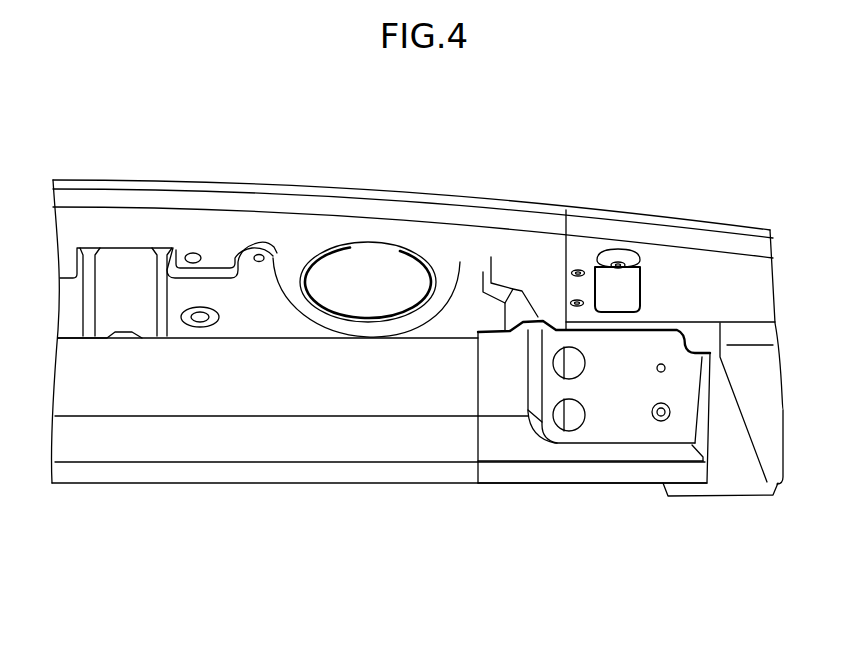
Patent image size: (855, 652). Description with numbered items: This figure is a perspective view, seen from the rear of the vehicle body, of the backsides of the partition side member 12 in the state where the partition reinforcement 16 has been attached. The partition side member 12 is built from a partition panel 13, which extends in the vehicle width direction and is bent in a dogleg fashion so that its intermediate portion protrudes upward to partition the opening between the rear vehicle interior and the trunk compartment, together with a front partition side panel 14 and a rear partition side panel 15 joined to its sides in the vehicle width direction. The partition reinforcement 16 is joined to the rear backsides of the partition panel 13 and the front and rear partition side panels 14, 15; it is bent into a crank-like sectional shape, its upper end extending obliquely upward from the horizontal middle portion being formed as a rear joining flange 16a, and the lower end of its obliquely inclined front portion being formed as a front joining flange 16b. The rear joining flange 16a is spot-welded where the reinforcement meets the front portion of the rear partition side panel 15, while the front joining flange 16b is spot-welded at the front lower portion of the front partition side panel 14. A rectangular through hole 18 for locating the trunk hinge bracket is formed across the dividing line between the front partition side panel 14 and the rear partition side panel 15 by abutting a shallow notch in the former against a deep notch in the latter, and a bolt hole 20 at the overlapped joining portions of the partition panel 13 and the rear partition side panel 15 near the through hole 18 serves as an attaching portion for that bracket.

The partition side member 12 is at (188, 177).
The partition panel 13 is at (265, 223).
The front partition side panel 14 is at (742, 463).
The rear partition side panel 15 is at (727, 265).
The partition reinforcement 16 is at (600, 429).
The rear joining flange 16a is at (663, 325).
The front joining flange 16b is at (560, 475).
The through hole 18 is at (638, 299).
The bolt hole 20 is at (575, 300).